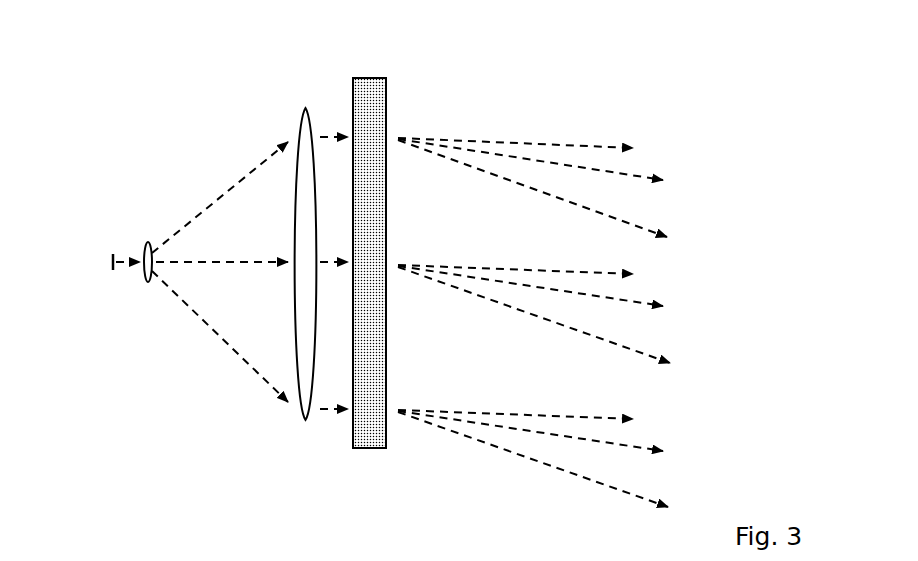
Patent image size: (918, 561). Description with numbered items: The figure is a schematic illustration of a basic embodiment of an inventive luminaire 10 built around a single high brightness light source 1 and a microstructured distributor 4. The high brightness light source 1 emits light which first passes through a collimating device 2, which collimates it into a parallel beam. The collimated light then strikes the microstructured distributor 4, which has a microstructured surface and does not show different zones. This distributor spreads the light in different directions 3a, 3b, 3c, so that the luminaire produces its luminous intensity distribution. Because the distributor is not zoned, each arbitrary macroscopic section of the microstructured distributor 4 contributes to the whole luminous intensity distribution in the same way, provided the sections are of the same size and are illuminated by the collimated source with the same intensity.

The high brightness light source 1 is at (112, 262).
The collimating device 2 is at (312, 435).
The microstructured distributor 4 is at (370, 82).
The luminaire 10 is at (219, 130).
The direction 3a is at (536, 287).
The direction 3b is at (552, 306).
The direction 3c is at (553, 336).